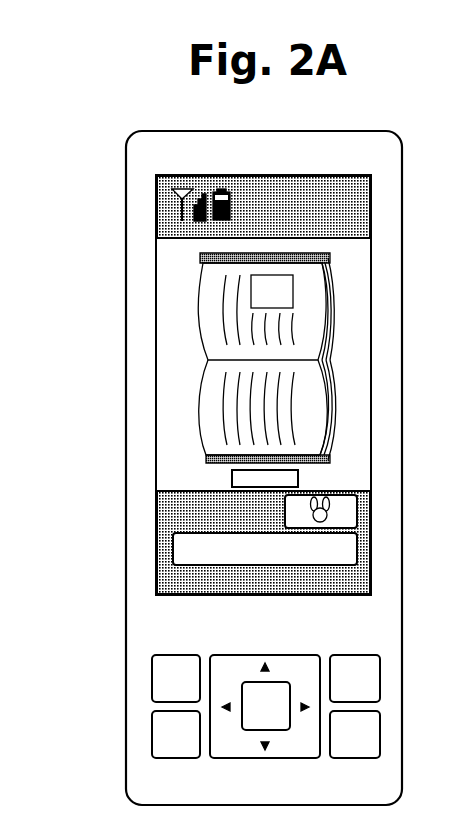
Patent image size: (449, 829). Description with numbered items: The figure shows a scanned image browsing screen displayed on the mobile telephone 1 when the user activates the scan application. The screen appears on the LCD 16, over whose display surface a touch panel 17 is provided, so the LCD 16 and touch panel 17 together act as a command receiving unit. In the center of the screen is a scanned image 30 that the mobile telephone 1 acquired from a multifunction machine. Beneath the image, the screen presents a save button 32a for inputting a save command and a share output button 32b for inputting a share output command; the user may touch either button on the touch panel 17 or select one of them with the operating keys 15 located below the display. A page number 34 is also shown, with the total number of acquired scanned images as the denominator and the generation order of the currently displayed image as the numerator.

The mobile telephone 1 is at (104, 152).
The operating keys 15 is at (158, 678).
The LCD 16 is at (163, 232).
The touch panel 17 is at (263, 207).
The scanned image 30 is at (167, 383).
The save button 32a is at (350, 552).
The share output button 32b is at (352, 510).
The page number 34 is at (298, 476).